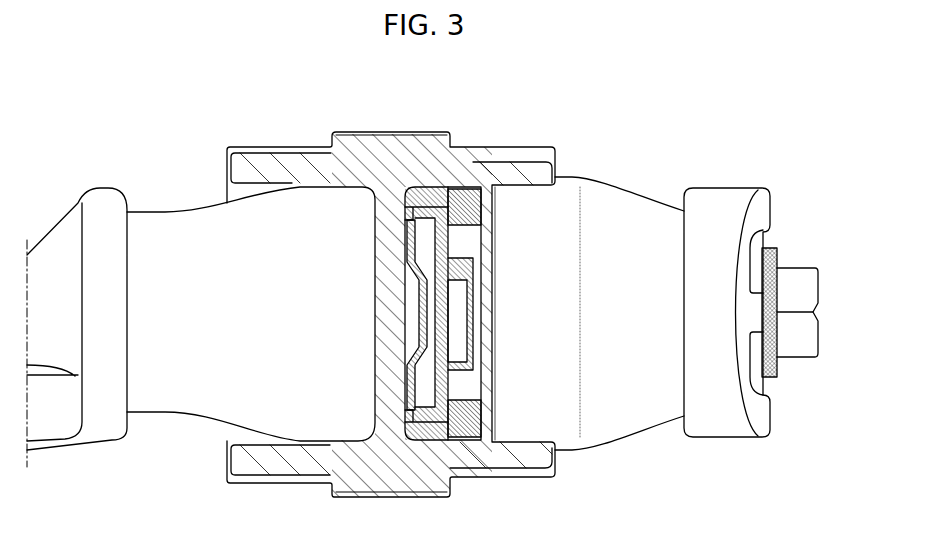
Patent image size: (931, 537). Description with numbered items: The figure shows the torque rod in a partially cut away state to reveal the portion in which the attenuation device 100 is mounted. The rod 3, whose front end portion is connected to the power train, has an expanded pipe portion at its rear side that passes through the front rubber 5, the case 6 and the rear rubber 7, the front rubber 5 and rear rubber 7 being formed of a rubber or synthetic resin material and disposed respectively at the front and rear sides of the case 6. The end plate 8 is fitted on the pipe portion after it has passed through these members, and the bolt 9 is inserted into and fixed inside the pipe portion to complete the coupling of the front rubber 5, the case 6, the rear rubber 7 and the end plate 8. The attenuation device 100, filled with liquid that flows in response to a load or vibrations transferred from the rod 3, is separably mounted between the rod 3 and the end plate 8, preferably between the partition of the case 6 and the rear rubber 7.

The rod 3 is at (55, 256).
The front rubber 5 is at (173, 233).
The case 6 is at (307, 176).
The rear rubber 7 is at (622, 228).
The end plate 8 is at (717, 409).
The bolt 9 is at (797, 290).
The attenuation device 100 is at (428, 190).